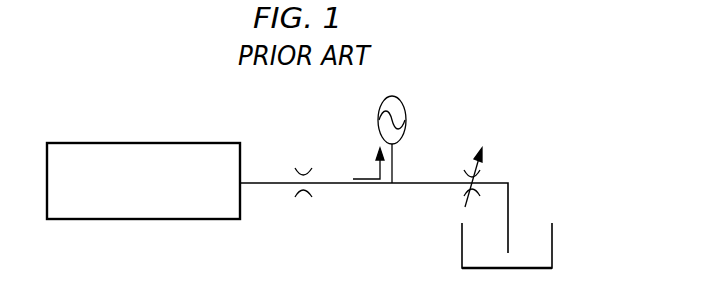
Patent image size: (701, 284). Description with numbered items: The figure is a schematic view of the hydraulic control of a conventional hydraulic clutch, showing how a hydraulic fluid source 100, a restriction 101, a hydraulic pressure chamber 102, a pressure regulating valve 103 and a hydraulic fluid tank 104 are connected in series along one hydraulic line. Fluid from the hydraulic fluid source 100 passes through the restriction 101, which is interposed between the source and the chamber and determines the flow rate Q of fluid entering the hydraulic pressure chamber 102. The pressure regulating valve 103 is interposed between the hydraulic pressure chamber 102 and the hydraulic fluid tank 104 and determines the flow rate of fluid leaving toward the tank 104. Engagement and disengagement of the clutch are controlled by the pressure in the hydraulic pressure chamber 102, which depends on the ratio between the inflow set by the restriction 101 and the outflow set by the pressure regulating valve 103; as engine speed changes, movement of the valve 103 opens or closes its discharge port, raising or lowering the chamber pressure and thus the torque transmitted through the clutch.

The hydraulic fluid source 100 is at (145, 143).
The restriction 101 is at (302, 165).
The hydraulic pressure chamber 102 is at (406, 123).
The pressure regulating valve 103 is at (478, 175).
The hydraulic fluid tank 104 is at (462, 242).
The flow rate Q is at (365, 181).